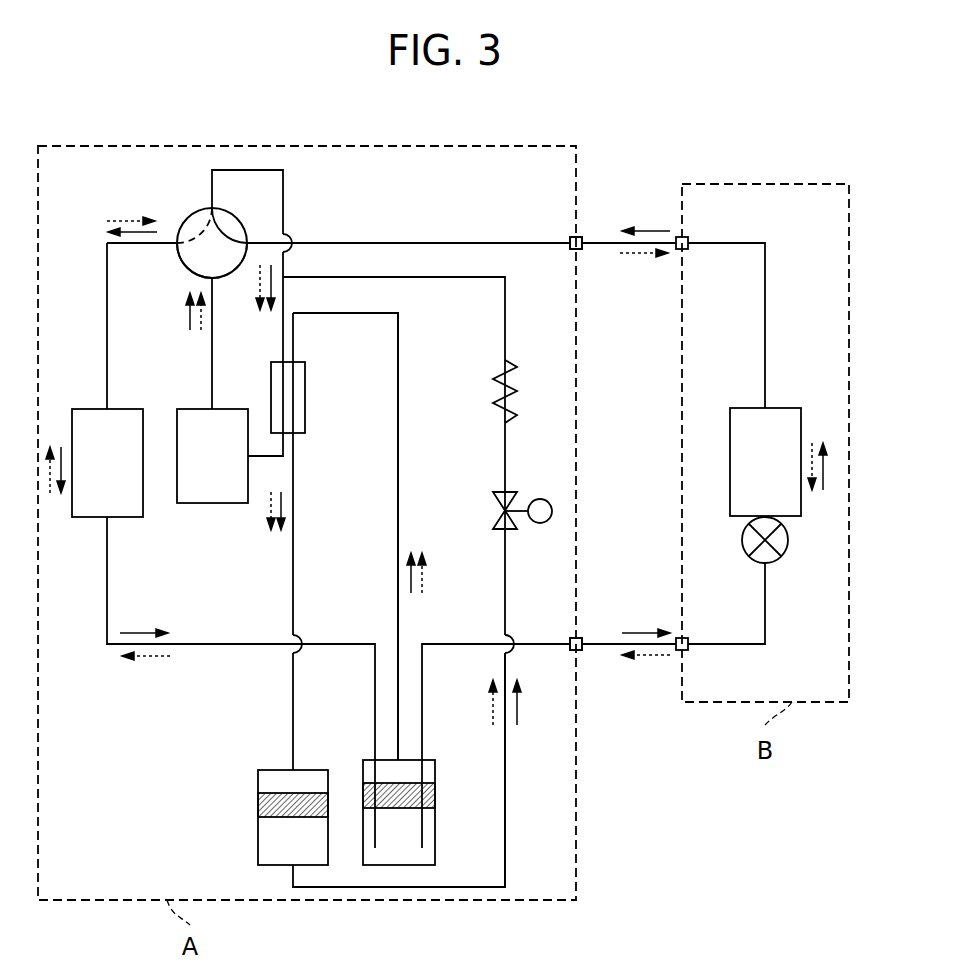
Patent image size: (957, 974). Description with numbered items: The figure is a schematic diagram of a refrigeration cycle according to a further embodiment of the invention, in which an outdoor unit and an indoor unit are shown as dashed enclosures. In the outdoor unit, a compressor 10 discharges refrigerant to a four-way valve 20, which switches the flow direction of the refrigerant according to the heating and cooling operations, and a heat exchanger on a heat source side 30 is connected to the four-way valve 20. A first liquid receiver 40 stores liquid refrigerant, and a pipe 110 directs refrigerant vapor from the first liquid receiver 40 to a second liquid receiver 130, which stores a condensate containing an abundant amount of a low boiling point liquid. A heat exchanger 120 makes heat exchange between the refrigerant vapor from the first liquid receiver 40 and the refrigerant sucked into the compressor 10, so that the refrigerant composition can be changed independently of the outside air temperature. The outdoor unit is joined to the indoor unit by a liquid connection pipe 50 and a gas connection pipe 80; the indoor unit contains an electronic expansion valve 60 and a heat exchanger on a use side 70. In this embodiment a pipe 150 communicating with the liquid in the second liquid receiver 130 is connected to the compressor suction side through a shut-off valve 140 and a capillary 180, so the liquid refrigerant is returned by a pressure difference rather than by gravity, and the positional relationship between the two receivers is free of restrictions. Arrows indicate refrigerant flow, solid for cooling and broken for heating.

The compressor 10 is at (203, 503).
The four-way valve 20 is at (197, 212).
The heat exchanger on a heat source side 30 is at (125, 409).
The first liquid receiver 40 is at (435, 830).
The liquid connection pipe 50 is at (595, 648).
The electronic expansion valve 60 is at (785, 560).
The heat exchanger on a use side 70 is at (780, 408).
The gas connection pipe 80 is at (595, 240).
The pipe 110 is at (398, 465).
The heat exchanger 120 is at (271, 385).
The second liquid receiver 130 is at (258, 832).
The shut-off valve 140 is at (510, 529).
The pipe 150 is at (505, 860).
The capillary 180 is at (517, 398).